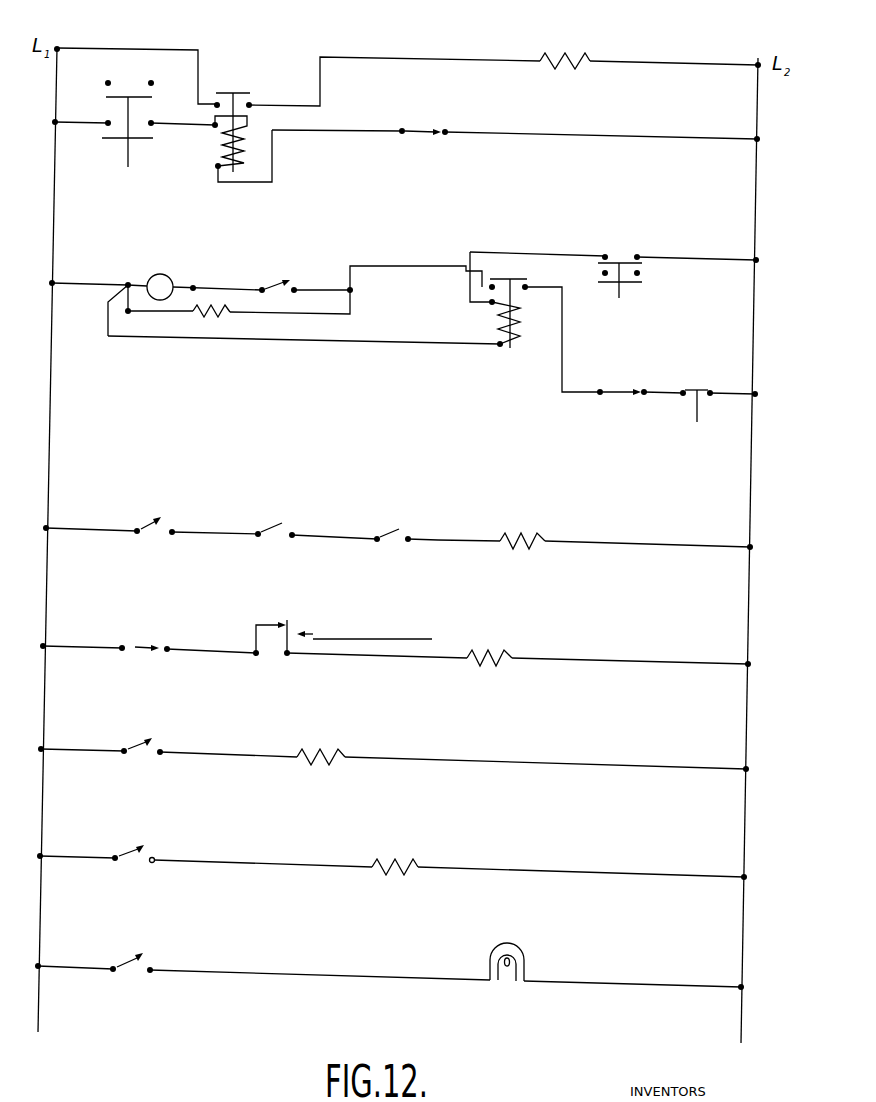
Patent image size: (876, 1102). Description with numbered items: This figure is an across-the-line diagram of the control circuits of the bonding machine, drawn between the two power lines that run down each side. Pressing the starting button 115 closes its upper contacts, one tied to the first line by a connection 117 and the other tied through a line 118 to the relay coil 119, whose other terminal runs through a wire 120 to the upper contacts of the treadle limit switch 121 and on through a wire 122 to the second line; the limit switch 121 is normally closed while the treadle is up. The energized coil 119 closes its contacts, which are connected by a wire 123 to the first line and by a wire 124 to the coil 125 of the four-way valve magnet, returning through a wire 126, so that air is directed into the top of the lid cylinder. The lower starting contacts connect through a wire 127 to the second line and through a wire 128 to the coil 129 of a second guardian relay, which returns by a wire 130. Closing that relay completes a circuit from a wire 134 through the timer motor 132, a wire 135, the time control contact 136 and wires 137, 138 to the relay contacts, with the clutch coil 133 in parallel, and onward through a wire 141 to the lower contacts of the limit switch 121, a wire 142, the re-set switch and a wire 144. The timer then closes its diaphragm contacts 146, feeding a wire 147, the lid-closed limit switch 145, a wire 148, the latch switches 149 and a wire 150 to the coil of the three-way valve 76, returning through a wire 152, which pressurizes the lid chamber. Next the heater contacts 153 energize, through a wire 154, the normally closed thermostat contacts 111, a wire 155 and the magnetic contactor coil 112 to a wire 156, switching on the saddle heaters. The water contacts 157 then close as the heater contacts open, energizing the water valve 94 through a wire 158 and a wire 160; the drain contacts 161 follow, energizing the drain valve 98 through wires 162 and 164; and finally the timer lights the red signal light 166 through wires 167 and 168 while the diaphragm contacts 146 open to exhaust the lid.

The three-way valve 76 is at (532, 533).
The water valve 94 is at (348, 754).
The drain valve 98 is at (408, 860).
The contactor 111 is at (280, 625).
The relay coil of magnetic contactor 112 is at (494, 647).
The starting button 115 is at (628, 299).
The connection 117 is at (90, 99).
The line 118 is at (168, 123).
The relay coil 119 is at (222, 150).
The wire 120 is at (276, 164).
The limit switch 121 is at (421, 126).
The wire 122 is at (636, 138).
The wire 123 is at (157, 50).
The wire 124 is at (420, 57).
The coil 125 is at (592, 48).
The wire 126 is at (661, 63).
The wire 127 is at (680, 259).
The wire 128 is at (537, 252).
The coil of second guardian relay 129 is at (520, 329).
The wire 130 is at (427, 345).
The motor 132 is at (164, 274).
The clutch coil 133 is at (183, 325).
The wire 134 is at (144, 280).
The wire 135 is at (223, 292).
The time control contact 136 is at (291, 281).
The wire 137 is at (324, 317).
The wire 138 is at (420, 266).
The wire 141 is at (557, 381).
The wire 142 is at (667, 380).
The wire 144 is at (733, 381).
The limit switch 145 is at (296, 533).
The diaphragm contacts 146 is at (152, 530).
The wire 147 is at (221, 532).
The wire 148 is at (343, 537).
The switches 149 is at (405, 534).
The wire 150 is at (438, 539).
The wire 152 is at (643, 546).
The heater contacts 153 is at (133, 650).
The wire 154 is at (222, 650).
The wire 155 is at (405, 658).
The wire 156 is at (574, 662).
The water contacts 157 is at (154, 745).
The wire 158 is at (232, 755).
The wire 160 is at (493, 765).
The drain contacts 161 is at (144, 854).
The wire 162 is at (257, 861).
The wire 164 is at (562, 871).
The red signal light 166 is at (522, 947).
The wire 167 is at (326, 979).
The wire 168 is at (630, 988).